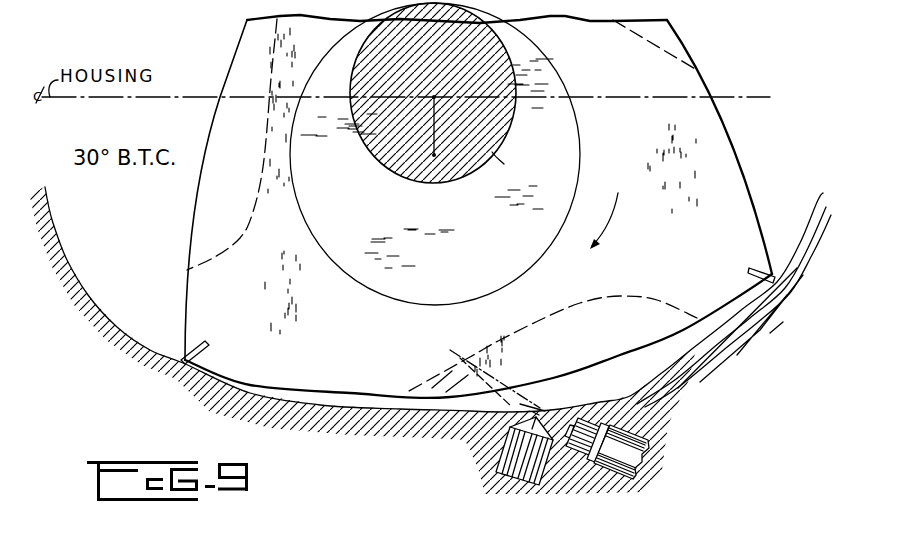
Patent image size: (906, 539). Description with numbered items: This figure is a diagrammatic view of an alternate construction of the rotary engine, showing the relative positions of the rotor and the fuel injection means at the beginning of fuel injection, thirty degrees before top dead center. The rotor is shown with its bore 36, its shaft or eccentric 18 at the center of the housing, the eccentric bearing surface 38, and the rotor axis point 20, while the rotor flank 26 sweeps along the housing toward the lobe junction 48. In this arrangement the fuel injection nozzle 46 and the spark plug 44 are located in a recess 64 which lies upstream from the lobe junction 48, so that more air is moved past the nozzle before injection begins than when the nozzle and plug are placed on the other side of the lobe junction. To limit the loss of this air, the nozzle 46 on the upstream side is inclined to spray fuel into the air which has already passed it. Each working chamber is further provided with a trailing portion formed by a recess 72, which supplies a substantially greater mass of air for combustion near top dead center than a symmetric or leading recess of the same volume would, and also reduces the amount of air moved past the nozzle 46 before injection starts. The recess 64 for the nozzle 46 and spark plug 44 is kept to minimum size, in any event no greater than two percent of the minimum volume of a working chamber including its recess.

The shaft / eccentric 18 is at (434, 97).
The rotor axis point 20 is at (434, 155).
The rotor flank 26 is at (645, 386).
The rotor bore 36 is at (453, 242).
The eccentric bearing surface 38 is at (504, 164).
The spark plug 44 is at (520, 482).
The fuel injection nozzle 46 is at (642, 450).
The lobe junction 48 is at (350, 412).
The recess 64 is at (534, 405).
The recess 72 is at (243, 228).